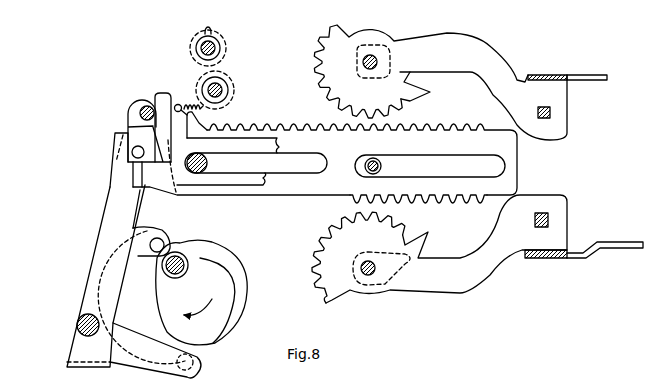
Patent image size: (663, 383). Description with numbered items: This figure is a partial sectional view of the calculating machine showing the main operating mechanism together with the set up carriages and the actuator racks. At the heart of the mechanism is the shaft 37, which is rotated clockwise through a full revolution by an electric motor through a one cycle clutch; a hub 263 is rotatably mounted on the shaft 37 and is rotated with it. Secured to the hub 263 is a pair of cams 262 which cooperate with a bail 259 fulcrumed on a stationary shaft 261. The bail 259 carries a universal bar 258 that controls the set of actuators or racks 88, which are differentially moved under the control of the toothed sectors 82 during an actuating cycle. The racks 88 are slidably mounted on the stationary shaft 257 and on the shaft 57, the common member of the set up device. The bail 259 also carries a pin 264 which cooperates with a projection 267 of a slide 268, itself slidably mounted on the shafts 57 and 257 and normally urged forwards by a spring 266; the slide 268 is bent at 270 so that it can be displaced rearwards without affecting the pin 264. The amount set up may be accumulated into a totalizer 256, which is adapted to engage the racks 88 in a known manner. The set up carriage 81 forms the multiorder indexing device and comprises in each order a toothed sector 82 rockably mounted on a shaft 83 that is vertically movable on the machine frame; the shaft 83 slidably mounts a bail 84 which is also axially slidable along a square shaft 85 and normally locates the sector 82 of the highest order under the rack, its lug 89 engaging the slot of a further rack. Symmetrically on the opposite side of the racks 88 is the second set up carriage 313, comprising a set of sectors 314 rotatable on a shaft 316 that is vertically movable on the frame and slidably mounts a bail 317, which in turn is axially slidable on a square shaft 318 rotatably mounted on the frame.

The bail 259 is at (67, 363).
The stationary shaft 261 is at (80, 320).
The projection 267 is at (122, 140).
The pin 264 is at (133, 124).
The universal bar 258 is at (146, 106).
The spring 266 is at (178, 104).
The totalizer 256 is at (240, 64).
The racks 88 is at (302, 133).
The slide 268 is at (252, 186).
The stationary shaft 257 is at (197, 174).
The shaft 57 is at (382, 166).
The second set up carriage 313 is at (390, 31).
The sectors 314 is at (412, 102).
The shaft 316 is at (367, 63).
The bail 317 is at (550, 75).
The square shaft 318 is at (551, 113).
The bend 270 is at (140, 190).
The hub 263 is at (172, 244).
The shaft 37 is at (190, 268).
The cams 262 is at (218, 325).
The toothed sector 82 is at (323, 290).
The set up carriage 81 is at (367, 306).
The shaft 83 is at (375, 275).
The square shaft 85 is at (549, 220).
The bail 84 is at (547, 259).
The lug 89 is at (614, 246).